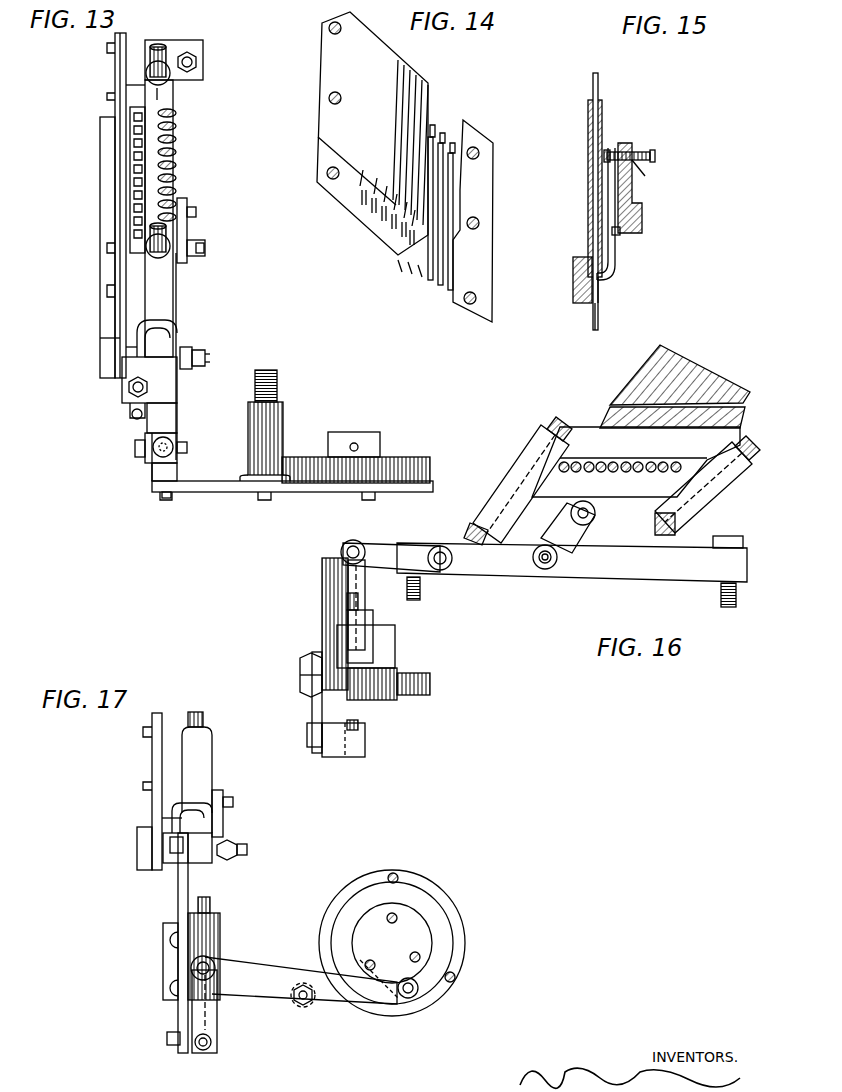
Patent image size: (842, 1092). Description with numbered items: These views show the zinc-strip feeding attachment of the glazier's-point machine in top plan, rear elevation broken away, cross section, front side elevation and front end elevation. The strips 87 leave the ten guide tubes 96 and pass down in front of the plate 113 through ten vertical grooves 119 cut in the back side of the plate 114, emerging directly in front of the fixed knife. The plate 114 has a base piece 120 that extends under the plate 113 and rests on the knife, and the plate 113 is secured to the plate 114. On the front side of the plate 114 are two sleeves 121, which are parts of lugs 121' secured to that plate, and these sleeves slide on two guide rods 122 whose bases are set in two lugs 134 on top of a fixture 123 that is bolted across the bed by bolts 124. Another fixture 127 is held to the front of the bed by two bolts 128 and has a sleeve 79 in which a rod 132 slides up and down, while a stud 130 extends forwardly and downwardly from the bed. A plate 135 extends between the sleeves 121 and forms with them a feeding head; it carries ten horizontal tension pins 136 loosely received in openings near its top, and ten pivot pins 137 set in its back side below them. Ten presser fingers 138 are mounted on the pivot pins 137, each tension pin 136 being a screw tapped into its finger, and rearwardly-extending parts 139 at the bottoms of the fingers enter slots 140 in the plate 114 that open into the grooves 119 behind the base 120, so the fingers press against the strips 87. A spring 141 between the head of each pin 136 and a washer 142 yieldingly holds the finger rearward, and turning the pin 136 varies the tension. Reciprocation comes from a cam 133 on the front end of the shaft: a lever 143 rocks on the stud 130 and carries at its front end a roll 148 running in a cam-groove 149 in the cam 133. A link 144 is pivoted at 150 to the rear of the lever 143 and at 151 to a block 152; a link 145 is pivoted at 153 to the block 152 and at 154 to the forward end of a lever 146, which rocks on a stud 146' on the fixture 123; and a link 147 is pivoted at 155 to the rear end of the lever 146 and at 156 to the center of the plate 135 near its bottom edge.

In FIG. 16, the sleeve 79 is at (356, 668).
In FIG. 17, the sleeve 79 is at (213, 940).
In FIG. 15, the strips 87 is at (591, 309).
In FIG. 16, the strips 87 is at (724, 421).
In FIG. 16, the guide tubes 96 is at (697, 368).
In FIG. 13, the plate 113 is at (118, 88).
In FIG. 14, the plate 113 is at (372, 133).
In FIG. 15, the plate 113 is at (592, 121).
In FIG. 17, the plate 113 is at (195, 758).
In FIG. 13, the plate 114 is at (125, 37).
In FIG. 14, the plate 114 is at (430, 100).
In FIG. 15, the plate 114 is at (600, 119).
In FIG. 16, the plate 114 is at (636, 462).
In FIG. 17, the plate 114 is at (158, 713).
In FIG. 13, the vertical grooves 119 is at (118, 142).
In FIG. 14, the vertical grooves 119 is at (417, 83).
In FIG. 13, the base piece 120 is at (107, 358).
In FIG. 14, the base piece 120 is at (334, 187).
In FIG. 15, the base piece 120 is at (574, 283).
In FIG. 17, the base piece 120 is at (145, 850).
In FIG. 13, the sleeves 121 is at (198, 198).
In FIG. 16, the sleeves 121 is at (622, 484).
In FIG. 17, the sleeves 121 is at (220, 770).
In FIG. 13, the lugs 121' is at (95, 194).
In FIG. 17, the lugs 121' is at (142, 812).
In FIG. 13, the guide rods 122 is at (166, 48).
In FIG. 16, the guide rods 122 is at (560, 420).
In FIG. 17, the guide rods 122 is at (200, 713).
In FIG. 13, the fixture 123 is at (157, 375).
In FIG. 16, the fixture 123 is at (572, 559).
In FIG. 13, the bolts 124 is at (197, 62).
In FIG. 16, the bolts 124 is at (415, 600).
In FIG. 13, the fixture 127 is at (157, 423).
In FIG. 17, the fixture 127 is at (168, 960).
In FIG. 13, the bolts 128 is at (131, 422).
In FIG. 17, the bolts 128 is at (170, 940).
In FIG. 13, the stud 130 is at (272, 430).
In FIG. 16, the stud 130 is at (387, 703).
In FIG. 17, the stud 130 is at (303, 1003).
In FIG. 16, the rod 132 is at (358, 724).
In FIG. 17, the rod 132 is at (210, 903).
In FIG. 13, the cam 133 is at (380, 467).
In FIG. 16, the cam 133 is at (332, 586).
In FIG. 17, the cam 133 is at (432, 890).
In FIG. 13, the lugs 134 is at (160, 343).
In FIG. 16, the lugs 134 is at (655, 539).
In FIG. 17, the lugs 134 is at (200, 825).
In FIG. 13, the plate 135 is at (150, 135).
In FIG. 15, the plate 135 is at (637, 198).
In FIG. 16, the plate 135 is at (680, 497).
In FIG. 13, the tension pins 136 is at (138, 157).
In FIG. 14, the tension pins 136 is at (450, 153).
In FIG. 15, the tension pins 136 is at (620, 150).
In FIG. 16, the tension pins 136 is at (638, 463).
In FIG. 15, the pivot pins 137 is at (623, 233).
In FIG. 13, the presser fingers 138 is at (133, 238).
In FIG. 14, the presser fingers 138 is at (451, 172).
In FIG. 15, the presser fingers 138 is at (611, 188).
In FIG. 14, the rearwardly-extending parts 139 is at (423, 280).
In FIG. 15, the rearwardly-extending parts 139 is at (609, 283).
In FIG. 14, the slots 140 is at (397, 242).
In FIG. 15, the slots 140 is at (599, 295).
In FIG. 13, the spring 141 is at (174, 178).
In FIG. 15, the spring 141 is at (646, 177).
In FIG. 13, the washer 142 is at (176, 112).
In FIG. 15, the washer 142 is at (651, 156).
In FIG. 16, the washer 142 is at (600, 463).
In FIG. 13, the lever 143 is at (217, 488).
In FIG. 16, the lever 143 is at (315, 699).
In FIG. 17, the lever 143 is at (340, 1001).
In FIG. 13, the link 144 is at (172, 479).
In FIG. 16, the link 144 is at (323, 748).
In FIG. 17, the link 144 is at (208, 1018).
In FIG. 13, the link 145 is at (147, 455).
In FIG. 16, the link 145 is at (357, 582).
In FIG. 17, the link 145 is at (182, 1015).
In FIG. 13, the lever 146 is at (215, 356).
In FIG. 16, the lever 146 is at (397, 539).
In FIG. 17, the lever 146 is at (224, 859).
In FIG. 16, the stud 146' is at (499, 590).
In FIG. 17, the stud 146' is at (258, 837).
In FIG. 13, the link 147 is at (185, 203).
In FIG. 16, the link 147 is at (562, 537).
In FIG. 17, the link 147 is at (218, 790).
In FIG. 13, the roll 148 is at (372, 482).
In FIG. 17, the roll 148 is at (394, 999).
In FIG. 17, the cam-groove 149 is at (442, 930).
In FIG. 13, the pivotal connection 150 is at (166, 500).
In FIG. 16, the pivotal connection 150 is at (300, 665).
In FIG. 17, the pivotal connection 150 is at (217, 965).
In FIG. 16, the pivotal connection 151 is at (313, 736).
In FIG. 17, the pivotal connection 151 is at (204, 1051).
In FIG. 13, the block 152 is at (170, 437).
In FIG. 16, the block 152 is at (350, 742).
In FIG. 17, the block 152 is at (203, 853).
In FIG. 13, the pivotal connection 153 is at (135, 448).
In FIG. 17, the pivotal connection 153 is at (170, 1038).
In FIG. 13, the pivotal connection 154 is at (187, 448).
In FIG. 16, the pivotal connection 154 is at (344, 545).
In FIG. 17, the pivotal connection 154 is at (238, 853).
In FIG. 13, the pivotal connection 155 is at (205, 250).
In FIG. 16, the pivotal connection 155 is at (556, 566).
In FIG. 13, the pivotal connection 156 is at (196, 212).
In FIG. 16, the pivotal connection 156 is at (606, 512).
In FIG. 17, the pivotal connection 156 is at (233, 802).